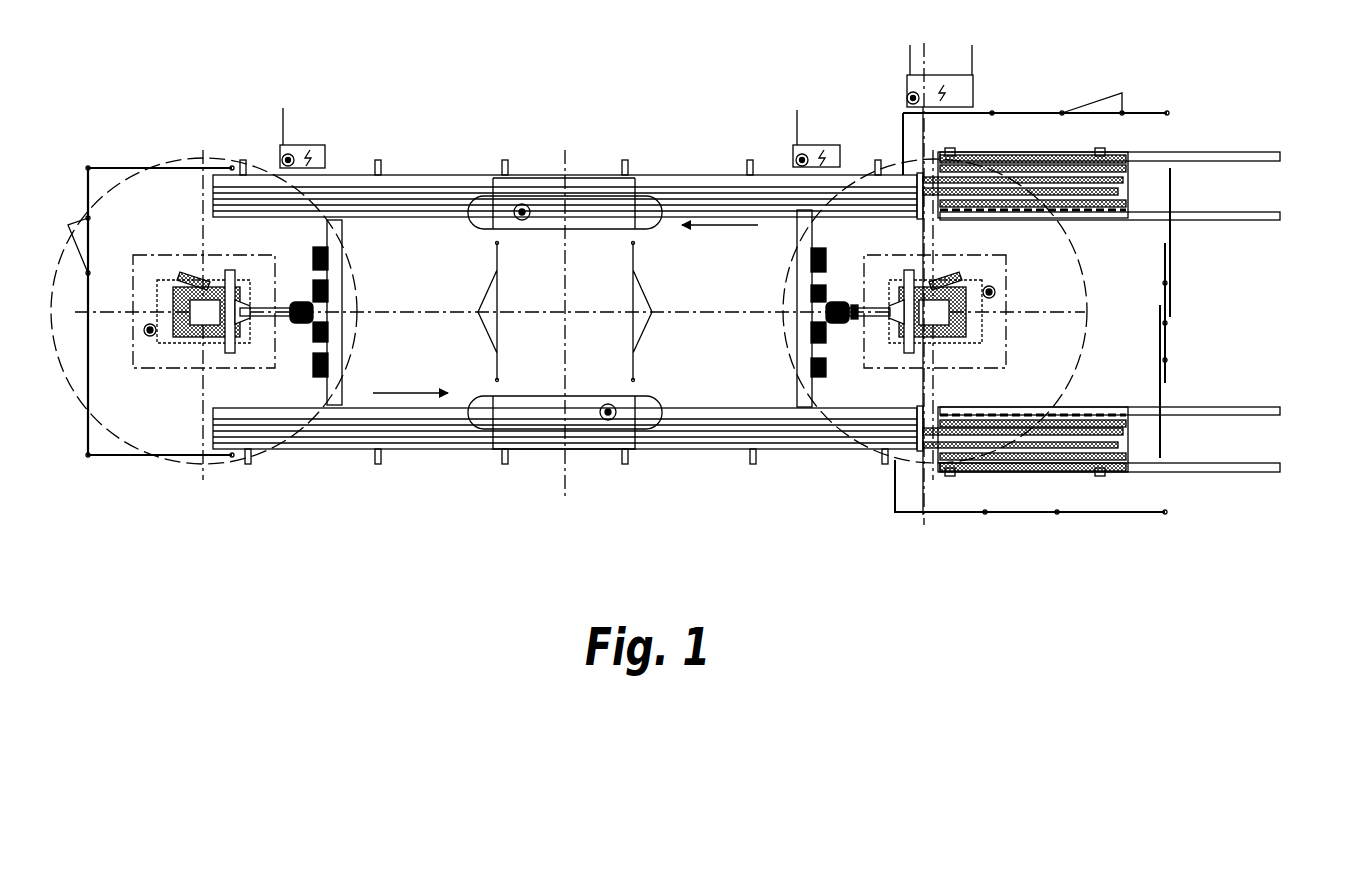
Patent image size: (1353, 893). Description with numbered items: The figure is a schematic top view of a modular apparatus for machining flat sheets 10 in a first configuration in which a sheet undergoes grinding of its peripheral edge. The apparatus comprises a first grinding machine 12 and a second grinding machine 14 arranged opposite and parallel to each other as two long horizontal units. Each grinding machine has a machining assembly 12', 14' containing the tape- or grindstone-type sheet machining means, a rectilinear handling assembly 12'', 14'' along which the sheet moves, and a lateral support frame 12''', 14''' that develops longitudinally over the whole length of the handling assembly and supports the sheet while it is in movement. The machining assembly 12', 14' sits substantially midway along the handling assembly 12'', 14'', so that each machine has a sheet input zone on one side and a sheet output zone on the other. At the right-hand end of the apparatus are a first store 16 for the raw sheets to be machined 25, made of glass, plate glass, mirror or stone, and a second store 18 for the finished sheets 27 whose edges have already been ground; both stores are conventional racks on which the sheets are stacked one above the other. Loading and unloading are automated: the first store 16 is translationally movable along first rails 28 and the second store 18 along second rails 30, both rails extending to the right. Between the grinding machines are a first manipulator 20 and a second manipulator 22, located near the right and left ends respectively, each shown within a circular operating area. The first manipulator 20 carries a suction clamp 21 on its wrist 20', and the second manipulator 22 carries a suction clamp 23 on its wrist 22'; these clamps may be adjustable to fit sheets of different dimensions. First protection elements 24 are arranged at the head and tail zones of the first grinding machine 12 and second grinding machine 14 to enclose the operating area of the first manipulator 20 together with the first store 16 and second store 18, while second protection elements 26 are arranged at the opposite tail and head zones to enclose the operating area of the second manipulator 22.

The modular apparatus for machining flat sheets 10 is at (326, 514).
The first grinding machine 12 is at (568, 151).
The machining assembly 12' is at (565, 154).
The rectilinear handling assembly 12'' is at (565, 167).
The lateral support frame 12''' is at (560, 127).
The second grinding machine 14 is at (568, 483).
The machining assembly 14' is at (552, 467).
The rectilinear handling assembly 14'' is at (565, 457).
The lateral support frame 14''' is at (566, 494).
The first store 16 is at (1059, 153).
The second store 18 is at (1044, 468).
The first manipulator 20 is at (973, 306).
The wrist 20' is at (850, 310).
The suction clamp 21 is at (810, 305).
The second manipulator 22 is at (192, 381).
The wrist 22' is at (310, 316).
The suction clamp 23 is at (325, 307).
The first protection elements 24 is at (1011, 107).
The raw sheets to be machined 25 is at (1117, 189).
The second protection elements 26 is at (121, 162).
The finished sheets 27 is at (1077, 452).
The first rails 28 is at (1255, 170).
The second rails 30 is at (1262, 420).